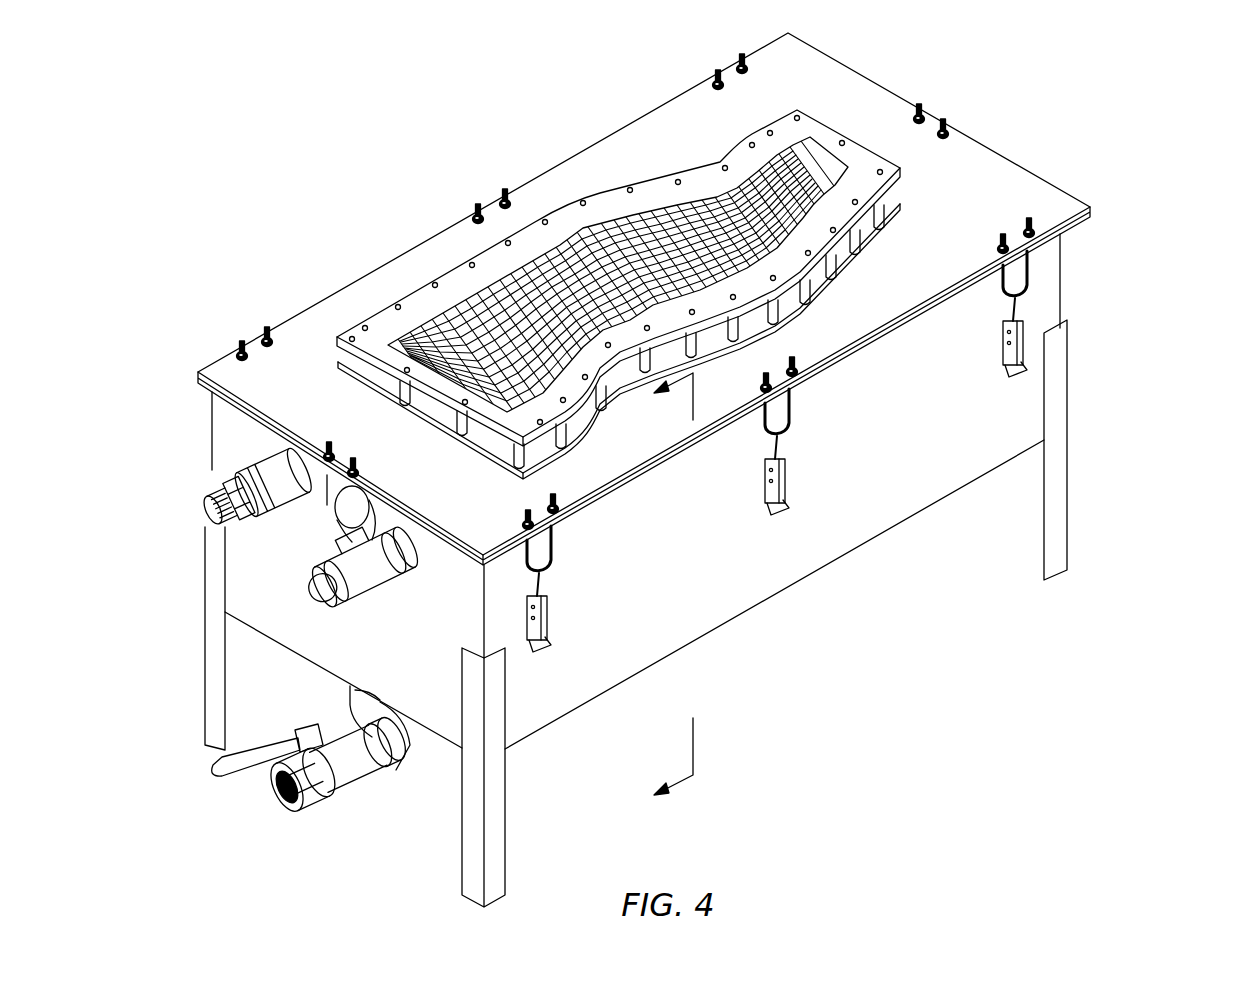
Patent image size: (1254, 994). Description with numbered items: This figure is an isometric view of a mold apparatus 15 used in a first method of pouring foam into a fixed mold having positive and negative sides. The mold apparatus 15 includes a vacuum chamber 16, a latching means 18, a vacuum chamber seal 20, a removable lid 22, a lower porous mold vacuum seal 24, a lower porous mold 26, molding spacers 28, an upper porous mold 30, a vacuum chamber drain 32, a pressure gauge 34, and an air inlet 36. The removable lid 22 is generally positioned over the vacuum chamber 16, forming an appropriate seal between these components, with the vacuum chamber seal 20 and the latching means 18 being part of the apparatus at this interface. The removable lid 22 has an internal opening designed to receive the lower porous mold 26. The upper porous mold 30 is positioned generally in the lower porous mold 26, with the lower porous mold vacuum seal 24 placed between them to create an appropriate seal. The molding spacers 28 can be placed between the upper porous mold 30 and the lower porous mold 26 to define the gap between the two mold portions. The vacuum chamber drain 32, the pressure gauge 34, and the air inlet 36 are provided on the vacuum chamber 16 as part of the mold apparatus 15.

The mold apparatus 15 is at (1130, 191).
The vacuum chamber 16 is at (750, 582).
The latching means 18 is at (1038, 368).
The vacuum chamber seal 20 is at (1092, 215).
The removable lid 22 is at (1030, 185).
The lower porous mold vacuum seal 24 is at (338, 362).
The lower porous mold 26 is at (905, 178).
The molding spacers 28 is at (808, 278).
The upper porous mold 30 is at (812, 128).
The vacuum chamber drain 32 is at (327, 783).
The pressure gauge 34 is at (348, 512).
The air inlet 36 is at (205, 508).